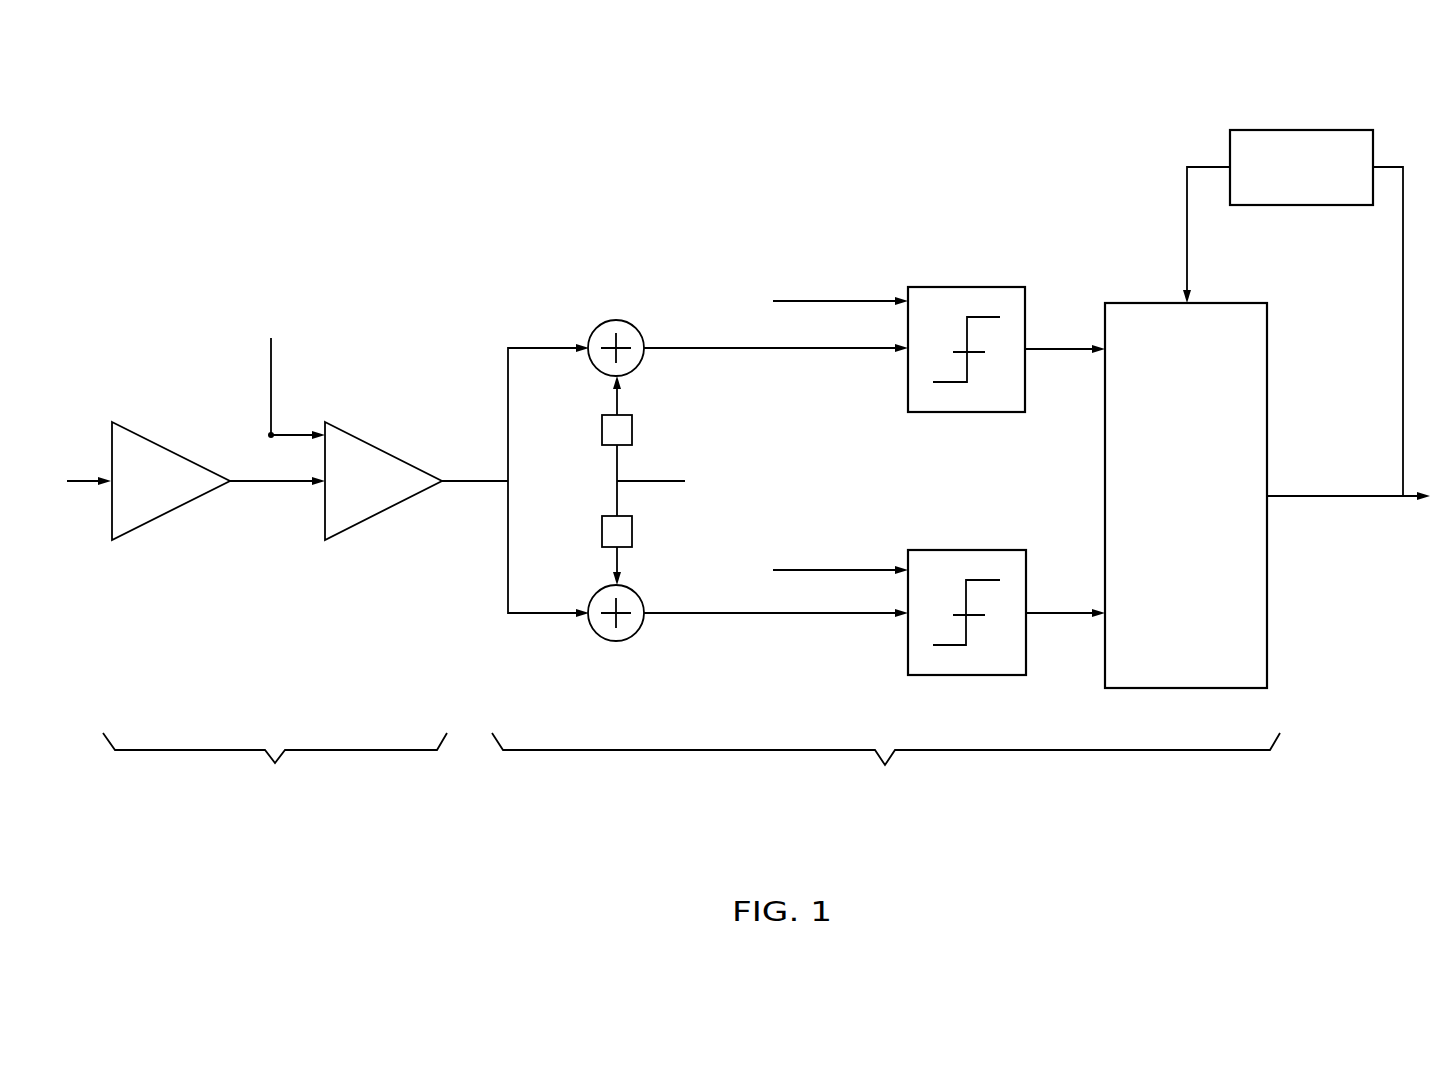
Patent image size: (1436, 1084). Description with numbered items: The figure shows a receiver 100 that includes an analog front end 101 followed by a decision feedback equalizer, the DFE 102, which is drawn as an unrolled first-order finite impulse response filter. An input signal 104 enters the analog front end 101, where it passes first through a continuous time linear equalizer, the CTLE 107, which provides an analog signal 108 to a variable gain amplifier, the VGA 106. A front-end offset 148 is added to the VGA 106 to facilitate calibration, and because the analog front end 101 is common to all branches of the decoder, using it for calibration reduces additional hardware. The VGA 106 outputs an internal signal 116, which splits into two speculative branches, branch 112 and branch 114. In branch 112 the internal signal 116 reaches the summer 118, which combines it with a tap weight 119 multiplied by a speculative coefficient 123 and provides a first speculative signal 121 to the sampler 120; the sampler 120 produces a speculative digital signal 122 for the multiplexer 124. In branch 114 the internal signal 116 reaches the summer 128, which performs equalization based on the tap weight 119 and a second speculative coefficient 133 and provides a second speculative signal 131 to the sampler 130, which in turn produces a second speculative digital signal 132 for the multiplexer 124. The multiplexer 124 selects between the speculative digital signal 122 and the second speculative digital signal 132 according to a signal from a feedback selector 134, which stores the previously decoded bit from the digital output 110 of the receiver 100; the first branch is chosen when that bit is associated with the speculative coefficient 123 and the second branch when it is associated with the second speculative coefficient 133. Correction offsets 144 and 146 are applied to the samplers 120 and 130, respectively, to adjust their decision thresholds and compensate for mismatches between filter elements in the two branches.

The receiver 100 is at (360, 167).
The analog front end 101 is at (275, 767).
The DFE 102 is at (886, 765).
The input signal 104 is at (82, 478).
The variable gain amplifier (VGA) 106 is at (386, 452).
The continuous time linear equalizer (CTLE) 107 is at (172, 452).
The analog signal 108 is at (274, 484).
The digital output 110 is at (1417, 497).
The branch 112 is at (480, 353).
The branch 114 is at (481, 624).
The internal signal 116 is at (476, 484).
The summer 118 is at (636, 370).
The tap weight 119 is at (648, 485).
The sampler 120 is at (967, 287).
The first speculative signal 121 is at (790, 350).
The speculative digital signal 122 is at (1058, 352).
The speculative coefficient 123 is at (600, 430).
The multiplexer 124 is at (1267, 640).
The summer 128 is at (595, 595).
The sampler 130 is at (966, 550).
The second speculative signal 131 is at (760, 615).
The second speculative digital signal 132 is at (1058, 615).
The second speculative coefficient 133 is at (612, 513).
The feedback selector 134 is at (1300, 130).
The correction offset 144 is at (835, 302).
The correction offset 146 is at (835, 572).
The front-end offset 148 is at (270, 362).